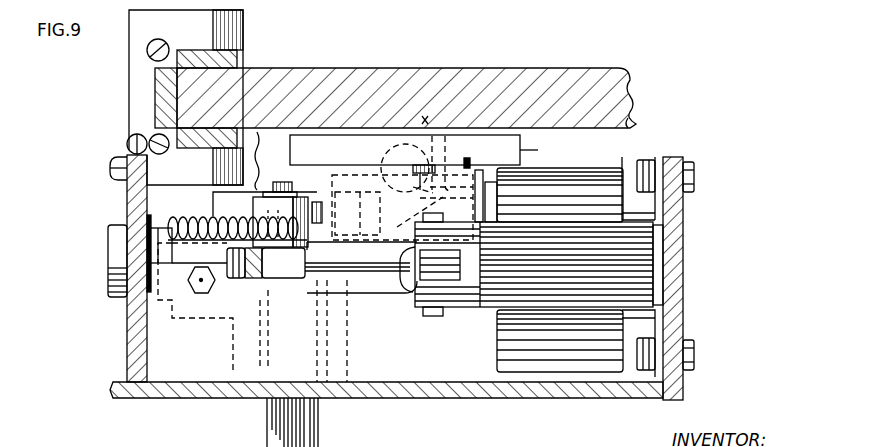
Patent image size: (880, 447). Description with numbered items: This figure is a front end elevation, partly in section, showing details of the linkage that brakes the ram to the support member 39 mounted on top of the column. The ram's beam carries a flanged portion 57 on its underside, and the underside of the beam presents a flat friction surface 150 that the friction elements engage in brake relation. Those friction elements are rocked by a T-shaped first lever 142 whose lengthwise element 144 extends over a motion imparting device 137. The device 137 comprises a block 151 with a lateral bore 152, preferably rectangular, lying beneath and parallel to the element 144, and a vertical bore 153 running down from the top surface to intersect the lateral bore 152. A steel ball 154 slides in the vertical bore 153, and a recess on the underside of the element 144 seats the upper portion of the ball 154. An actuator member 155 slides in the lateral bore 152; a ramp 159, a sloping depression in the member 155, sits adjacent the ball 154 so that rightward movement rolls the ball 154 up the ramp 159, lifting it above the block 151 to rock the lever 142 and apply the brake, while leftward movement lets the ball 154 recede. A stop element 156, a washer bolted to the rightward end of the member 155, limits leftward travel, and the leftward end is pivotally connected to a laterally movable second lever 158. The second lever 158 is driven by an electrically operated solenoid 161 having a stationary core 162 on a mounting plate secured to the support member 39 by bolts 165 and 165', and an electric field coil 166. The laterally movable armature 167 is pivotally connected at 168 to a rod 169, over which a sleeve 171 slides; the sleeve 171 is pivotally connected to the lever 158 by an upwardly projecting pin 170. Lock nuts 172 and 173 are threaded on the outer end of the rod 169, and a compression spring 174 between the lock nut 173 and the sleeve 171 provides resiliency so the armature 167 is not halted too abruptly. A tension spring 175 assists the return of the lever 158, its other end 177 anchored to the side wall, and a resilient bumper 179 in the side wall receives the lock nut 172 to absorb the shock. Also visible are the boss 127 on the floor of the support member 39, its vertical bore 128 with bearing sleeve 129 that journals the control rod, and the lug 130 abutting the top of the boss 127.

The flanged portion 57 is at (618, 71).
The flat friction surface 150 is at (622, 122).
The lengthwise element 144 is at (336, 156).
The stop element 156 is at (498, 180).
The first lever 142 is at (546, 150).
The ball 154 is at (388, 148).
The vertical bore 153 is at (432, 136).
The lateral bore 152 is at (446, 134).
The motion imparting device 137 is at (468, 158).
The block 151 is at (475, 176).
The second lever 158 is at (335, 188).
The ramp 159 is at (412, 196).
The actuator member 155 is at (411, 217).
The pin 170 is at (280, 182).
The lug 130 is at (211, 208).
The tension spring 175 is at (182, 226).
The other end of tension spring 177 is at (147, 220).
The resilient bumper 179 is at (117, 262).
The lock nut 172 is at (230, 278).
The lock nut 173 is at (240, 279).
The compression spring 174 is at (257, 280).
The sleeve 171 is at (291, 280).
The rod 169 is at (400, 280).
The bearing sleeve 129 is at (317, 306).
The vertical bore 128 is at (325, 326).
The boss 127 is at (338, 351).
The stationary core 162 is at (640, 263).
The solenoid 161 is at (662, 240).
The pivot connection 168 is at (433, 316).
The electric field coil 166 is at (592, 209).
The armature 167 is at (472, 299).
The bolt 165 is at (686, 176).
The bolt 165' is at (688, 354).
The support member 39 is at (446, 399).